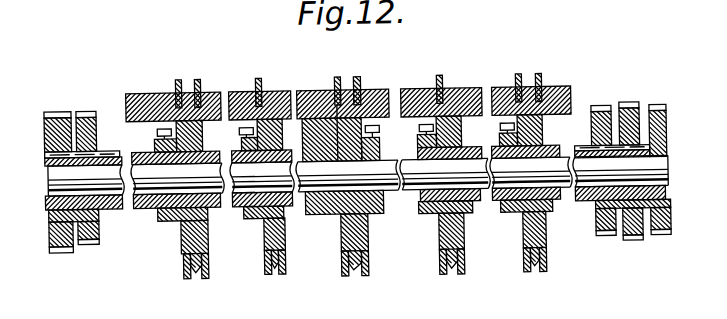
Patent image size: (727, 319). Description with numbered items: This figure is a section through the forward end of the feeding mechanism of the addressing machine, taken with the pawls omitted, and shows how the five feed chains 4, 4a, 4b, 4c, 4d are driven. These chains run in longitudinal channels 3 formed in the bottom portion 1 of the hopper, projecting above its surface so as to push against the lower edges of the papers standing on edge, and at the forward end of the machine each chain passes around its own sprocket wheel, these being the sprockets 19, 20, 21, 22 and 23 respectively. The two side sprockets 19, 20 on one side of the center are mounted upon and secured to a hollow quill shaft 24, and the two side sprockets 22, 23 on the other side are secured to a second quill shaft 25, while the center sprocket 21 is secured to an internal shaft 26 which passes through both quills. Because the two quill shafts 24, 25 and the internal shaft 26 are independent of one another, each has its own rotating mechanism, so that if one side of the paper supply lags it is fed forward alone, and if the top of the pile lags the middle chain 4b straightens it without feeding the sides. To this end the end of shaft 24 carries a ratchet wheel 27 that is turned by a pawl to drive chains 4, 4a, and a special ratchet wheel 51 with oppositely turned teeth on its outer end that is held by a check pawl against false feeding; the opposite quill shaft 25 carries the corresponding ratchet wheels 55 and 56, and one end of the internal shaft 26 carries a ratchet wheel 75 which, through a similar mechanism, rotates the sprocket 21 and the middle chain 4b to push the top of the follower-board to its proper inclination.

The bottom portion 1 is at (313, 90).
The longitudinal channels 3 is at (200, 88).
The feed chain 4 is at (178, 88).
The feed chain 4a is at (262, 85).
The middle feed chain 4b is at (358, 87).
The feed chain 4c is at (460, 89).
The feed chain 4d is at (540, 88).
The sprocket wheel 19 is at (205, 273).
The sprocket wheel 20 is at (282, 272).
The center sprocket 21 is at (352, 265).
The sprocket wheel 22 is at (450, 262).
The sprocket wheel 23 is at (532, 268).
The quill shaft 24 is at (152, 211).
The quill shaft 25 is at (548, 205).
The internal shaft 26 is at (367, 178).
The ratchet wheel 27 is at (85, 106).
The special ratchet wheel 51 is at (50, 106).
The ratchet wheel 55 is at (600, 110).
The ratchet wheel 56 is at (636, 107).
The ratchet wheel 75 is at (662, 247).